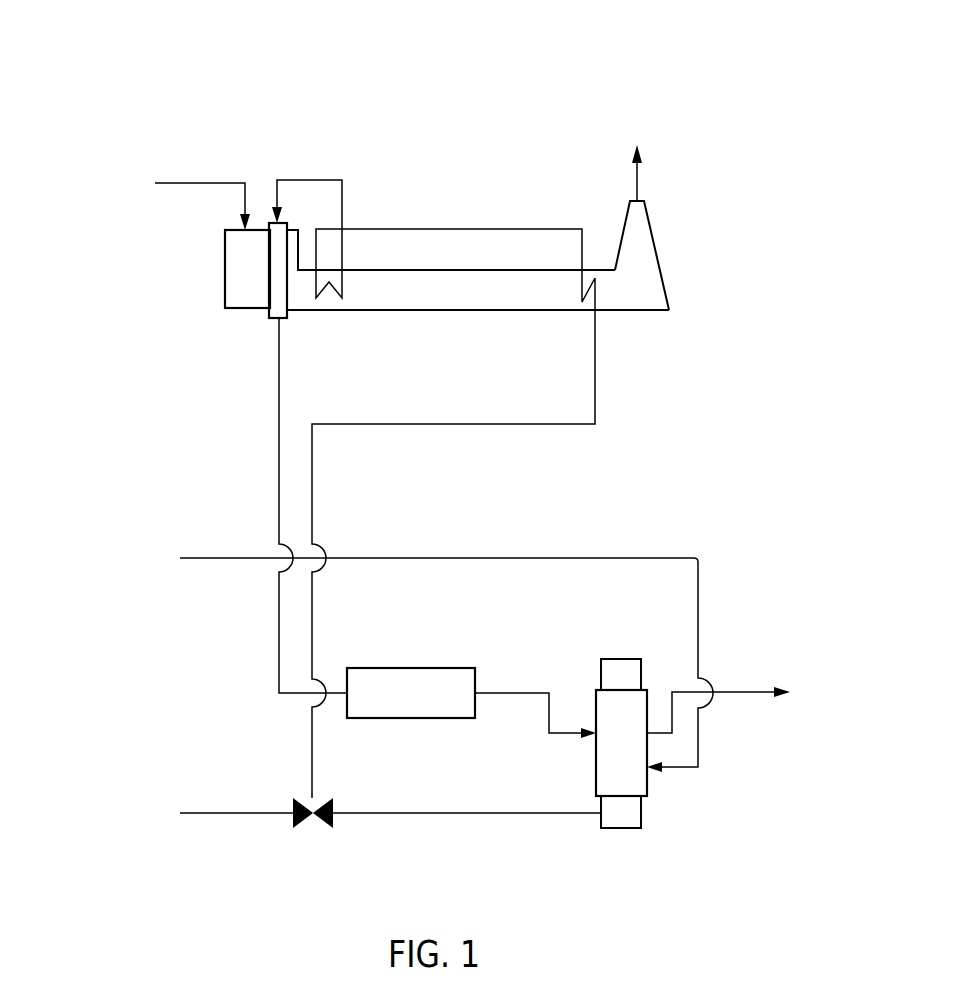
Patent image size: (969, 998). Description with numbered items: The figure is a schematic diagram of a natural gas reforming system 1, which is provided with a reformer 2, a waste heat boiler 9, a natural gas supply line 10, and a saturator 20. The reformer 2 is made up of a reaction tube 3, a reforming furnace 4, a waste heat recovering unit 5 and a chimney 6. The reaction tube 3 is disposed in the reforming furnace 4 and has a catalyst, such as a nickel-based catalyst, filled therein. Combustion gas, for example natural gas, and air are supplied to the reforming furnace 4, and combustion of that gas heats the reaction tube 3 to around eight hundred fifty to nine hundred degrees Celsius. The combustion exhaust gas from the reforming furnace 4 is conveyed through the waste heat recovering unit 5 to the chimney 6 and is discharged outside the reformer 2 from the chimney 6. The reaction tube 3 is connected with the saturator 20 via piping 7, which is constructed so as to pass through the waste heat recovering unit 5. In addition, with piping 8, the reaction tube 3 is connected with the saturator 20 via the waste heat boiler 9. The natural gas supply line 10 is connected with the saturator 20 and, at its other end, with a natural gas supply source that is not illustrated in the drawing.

The natural gas reforming system 1 is at (580, 77).
The reformer 2 is at (455, 193).
The reaction tube 3 is at (270, 318).
The reforming furnace 4 is at (238, 272).
The waste heat recovering unit 5 is at (444, 296).
The chimney 6 is at (650, 257).
The piping 7 is at (568, 428).
The piping 8 is at (279, 660).
The waste heat boiler 9 is at (413, 668).
The natural gas supply line 10 is at (486, 553).
The saturator 20 is at (620, 830).